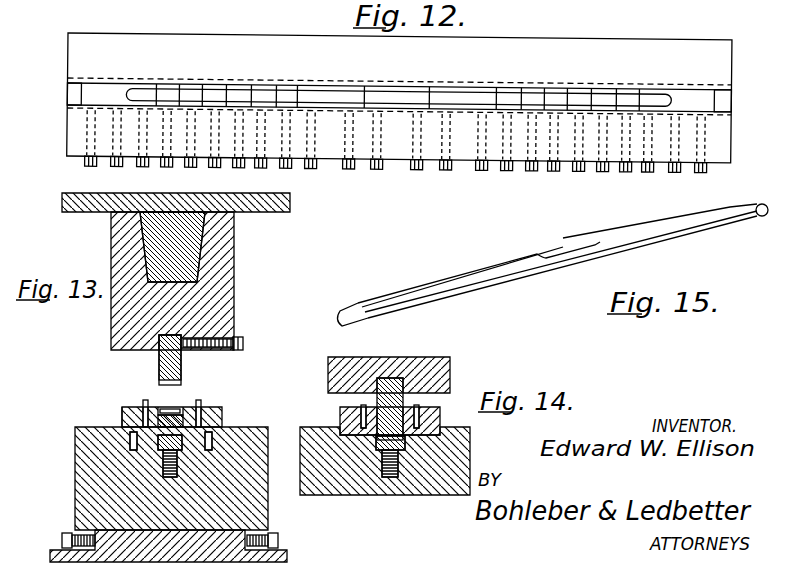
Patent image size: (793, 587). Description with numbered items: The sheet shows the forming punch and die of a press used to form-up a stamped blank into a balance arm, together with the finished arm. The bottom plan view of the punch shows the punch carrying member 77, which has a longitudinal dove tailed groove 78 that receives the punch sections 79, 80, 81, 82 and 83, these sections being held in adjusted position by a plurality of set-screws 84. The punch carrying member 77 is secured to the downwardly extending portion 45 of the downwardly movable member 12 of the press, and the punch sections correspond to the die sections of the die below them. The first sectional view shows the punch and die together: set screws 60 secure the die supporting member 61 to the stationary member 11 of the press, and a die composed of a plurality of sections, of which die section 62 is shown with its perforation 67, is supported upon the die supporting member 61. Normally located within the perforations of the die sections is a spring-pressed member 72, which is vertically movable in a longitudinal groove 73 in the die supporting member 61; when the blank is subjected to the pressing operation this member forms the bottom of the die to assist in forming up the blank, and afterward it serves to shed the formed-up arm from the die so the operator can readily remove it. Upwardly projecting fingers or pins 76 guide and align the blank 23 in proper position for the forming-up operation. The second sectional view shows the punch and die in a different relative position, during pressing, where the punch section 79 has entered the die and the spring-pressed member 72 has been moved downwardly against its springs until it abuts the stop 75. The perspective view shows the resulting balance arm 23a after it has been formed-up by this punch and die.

In FIG. 13, the stationary member 11 is at (288, 556).
In FIG. 13, the downwardly movable member 12 is at (290, 206).
In FIG. 13, the blank 23 is at (172, 406).
In FIG. 15, the balance arm 23a is at (645, 248).
In FIG. 13, the downwardly extending portion 45 is at (193, 249).
In FIG. 13, the set screws 60 is at (63, 534).
In FIG. 13, the die supporting member 61 is at (268, 428).
In FIG. 14, the die supporting member 61 is at (471, 447).
In FIG. 13, the die section 62 is at (222, 416).
In FIG. 14, the die section 62 is at (442, 423).
In FIG. 13, the perforation 67 is at (122, 414).
In FIG. 13, the spring-pressed member 72 is at (200, 409).
In FIG. 14, the spring-pressed member 72 is at (380, 445).
In FIG. 13, the longitudinal groove 73 is at (140, 443).
In FIG. 14, the stop 75 is at (398, 450).
In FIG. 13, the fingers or pins 76 is at (140, 403).
In FIG. 14, the fingers or pins 76 is at (419, 405).
In FIG. 12, the punch carrying member 77 is at (733, 48).
In FIG. 13, the punch carrying member 77 is at (237, 292).
In FIG. 14, the punch carrying member 77 is at (451, 363).
In FIG. 12, the dove tailed groove 78 is at (70, 92).
In FIG. 12, the punch section 79 is at (410, 86).
In FIG. 13, the punch section 79 is at (158, 365).
In FIG. 14, the punch section 79 is at (398, 379).
In FIG. 12, the punch section 80 is at (272, 88).
In FIG. 12, the punch section 81 is at (535, 92).
In FIG. 12, the punch section 82 is at (115, 91).
In FIG. 12, the punch section 83 is at (692, 90).
In FIG. 12, the set-screws 84 is at (197, 167).
In FIG. 13, the set-screws 84 is at (243, 341).